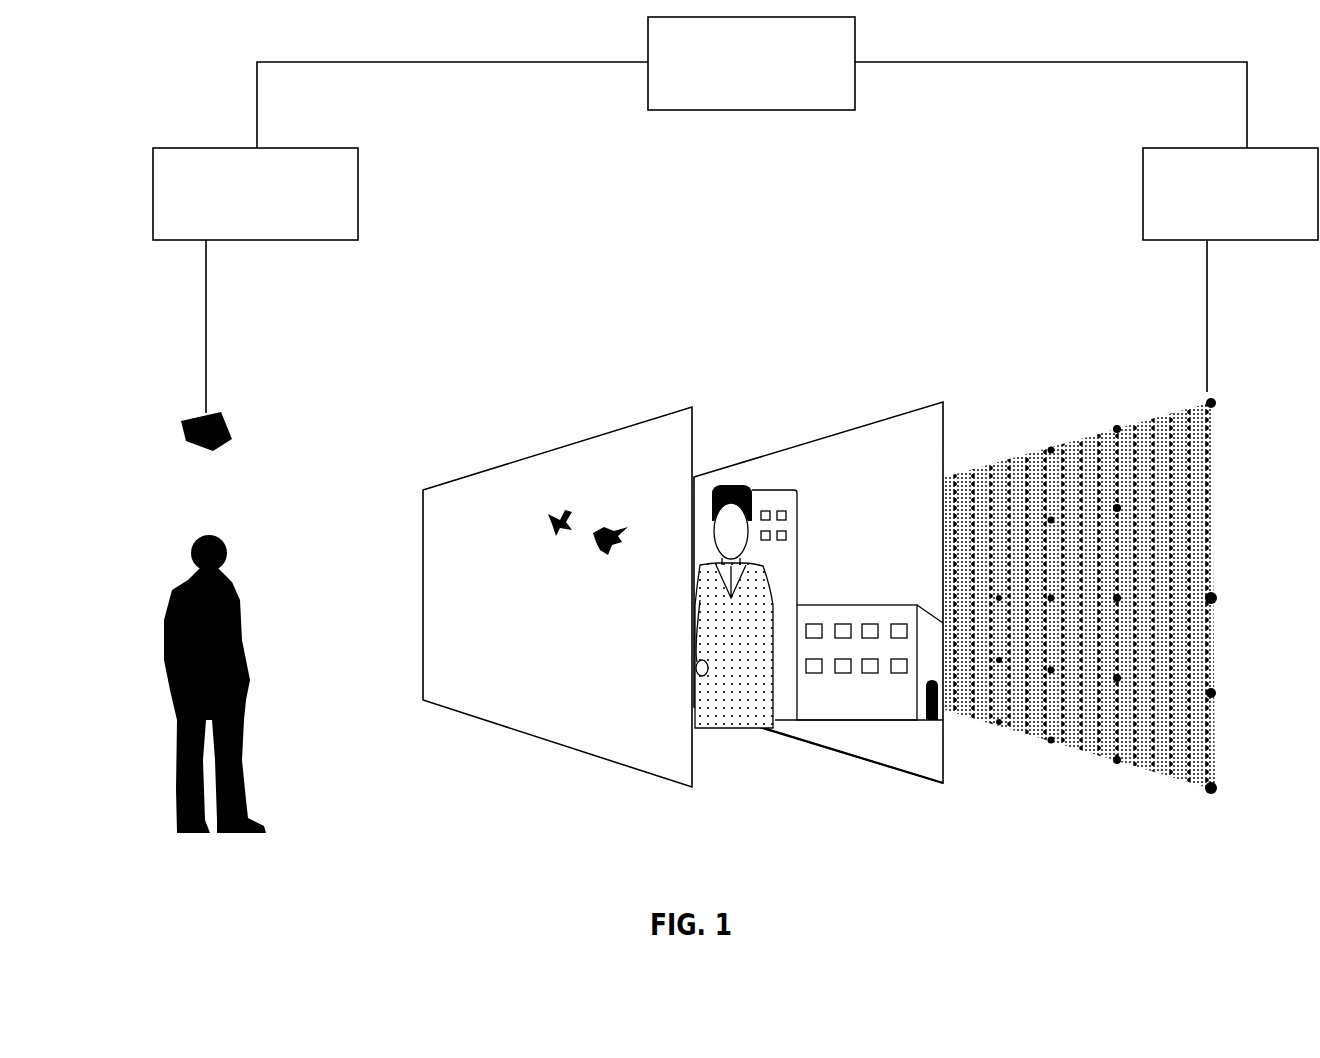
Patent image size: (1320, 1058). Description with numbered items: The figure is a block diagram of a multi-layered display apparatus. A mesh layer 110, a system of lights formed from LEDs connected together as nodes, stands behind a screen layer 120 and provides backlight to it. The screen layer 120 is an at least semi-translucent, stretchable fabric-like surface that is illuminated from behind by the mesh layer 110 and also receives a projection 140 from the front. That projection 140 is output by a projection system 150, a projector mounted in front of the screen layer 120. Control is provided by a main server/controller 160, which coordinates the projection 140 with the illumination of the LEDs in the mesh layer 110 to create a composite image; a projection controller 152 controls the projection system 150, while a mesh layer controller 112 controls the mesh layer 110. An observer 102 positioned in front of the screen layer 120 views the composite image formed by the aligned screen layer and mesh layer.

The observer 102 is at (238, 765).
The mesh layer 110 is at (1014, 393).
The mesh layer controller 112 is at (1228, 232).
The screen layer 120 is at (759, 392).
The projection 140 is at (518, 392).
The projection system 150 is at (236, 406).
The projection controller 152 is at (238, 232).
The main server/controller 160 is at (731, 101).